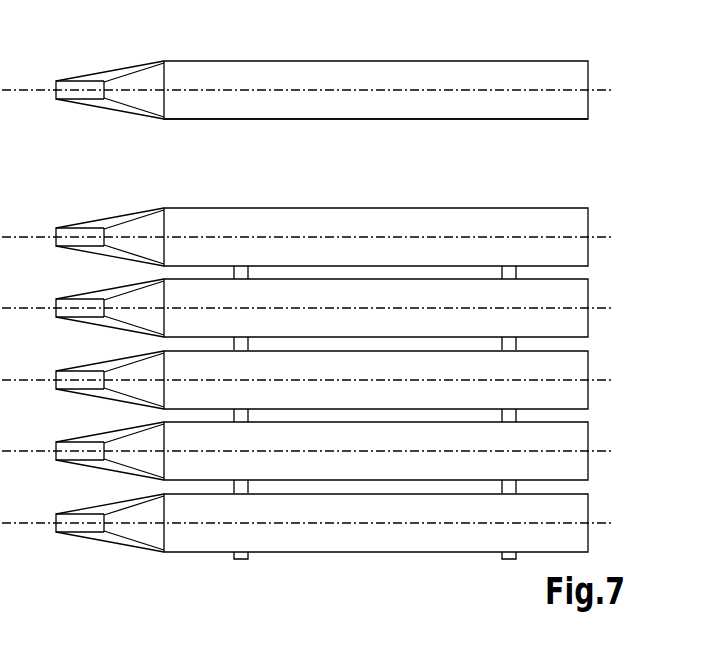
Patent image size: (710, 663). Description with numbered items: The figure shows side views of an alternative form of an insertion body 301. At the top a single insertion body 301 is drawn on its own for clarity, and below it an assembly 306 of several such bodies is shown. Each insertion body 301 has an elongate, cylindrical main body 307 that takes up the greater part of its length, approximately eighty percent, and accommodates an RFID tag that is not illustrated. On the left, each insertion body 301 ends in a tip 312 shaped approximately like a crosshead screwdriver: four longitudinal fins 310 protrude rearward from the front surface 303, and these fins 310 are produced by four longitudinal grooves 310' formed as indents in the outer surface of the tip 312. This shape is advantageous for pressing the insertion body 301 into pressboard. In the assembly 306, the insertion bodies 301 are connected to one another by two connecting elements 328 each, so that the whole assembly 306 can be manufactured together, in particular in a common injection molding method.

The insertion body 301 is at (534, 44).
The tip 303 is at (55, 82).
The assembly 306 is at (332, 308).
The main body 307 is at (363, 120).
The longitudinal fins 310 is at (99, 282).
The longitudinal grooves 310' is at (139, 291).
The tip 312 is at (152, 75).
The connecting elements 328 is at (248, 268).